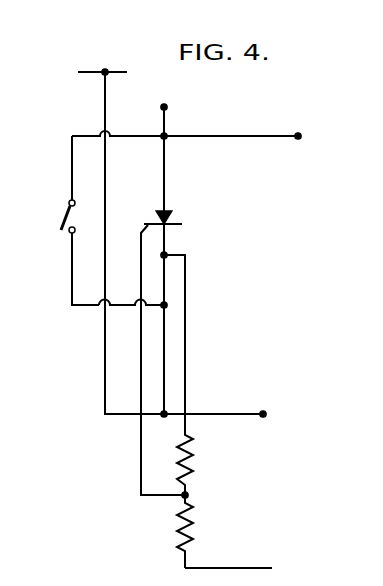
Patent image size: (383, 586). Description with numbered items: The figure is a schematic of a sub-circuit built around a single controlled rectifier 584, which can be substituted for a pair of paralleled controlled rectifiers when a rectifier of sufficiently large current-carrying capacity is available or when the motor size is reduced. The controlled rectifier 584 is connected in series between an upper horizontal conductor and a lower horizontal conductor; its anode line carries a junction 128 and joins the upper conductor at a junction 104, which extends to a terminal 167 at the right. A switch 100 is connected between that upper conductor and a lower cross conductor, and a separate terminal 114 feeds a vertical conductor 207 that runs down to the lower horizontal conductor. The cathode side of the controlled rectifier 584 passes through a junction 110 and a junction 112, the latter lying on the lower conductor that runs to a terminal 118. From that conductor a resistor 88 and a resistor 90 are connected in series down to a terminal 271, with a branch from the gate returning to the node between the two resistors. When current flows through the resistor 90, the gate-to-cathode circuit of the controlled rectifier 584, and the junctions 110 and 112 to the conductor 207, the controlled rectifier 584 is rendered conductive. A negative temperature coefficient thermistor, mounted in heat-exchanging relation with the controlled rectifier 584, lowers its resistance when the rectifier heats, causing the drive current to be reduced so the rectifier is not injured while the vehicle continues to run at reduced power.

The switch 100 is at (62, 237).
The terminal 114 is at (105, 72).
The conductor 207 is at (103, 398).
The junction 128 is at (164, 107).
The bus conductor 104 is at (166, 134).
The terminal 167 is at (298, 136).
The controlled rectifier 584 is at (172, 211).
The junction 110 is at (164, 305).
The junction 112 is at (164, 414).
The terminal 118 is at (263, 414).
The resistor 88 is at (193, 460).
The resistor 90 is at (193, 516).
The terminal 271 is at (273, 553).